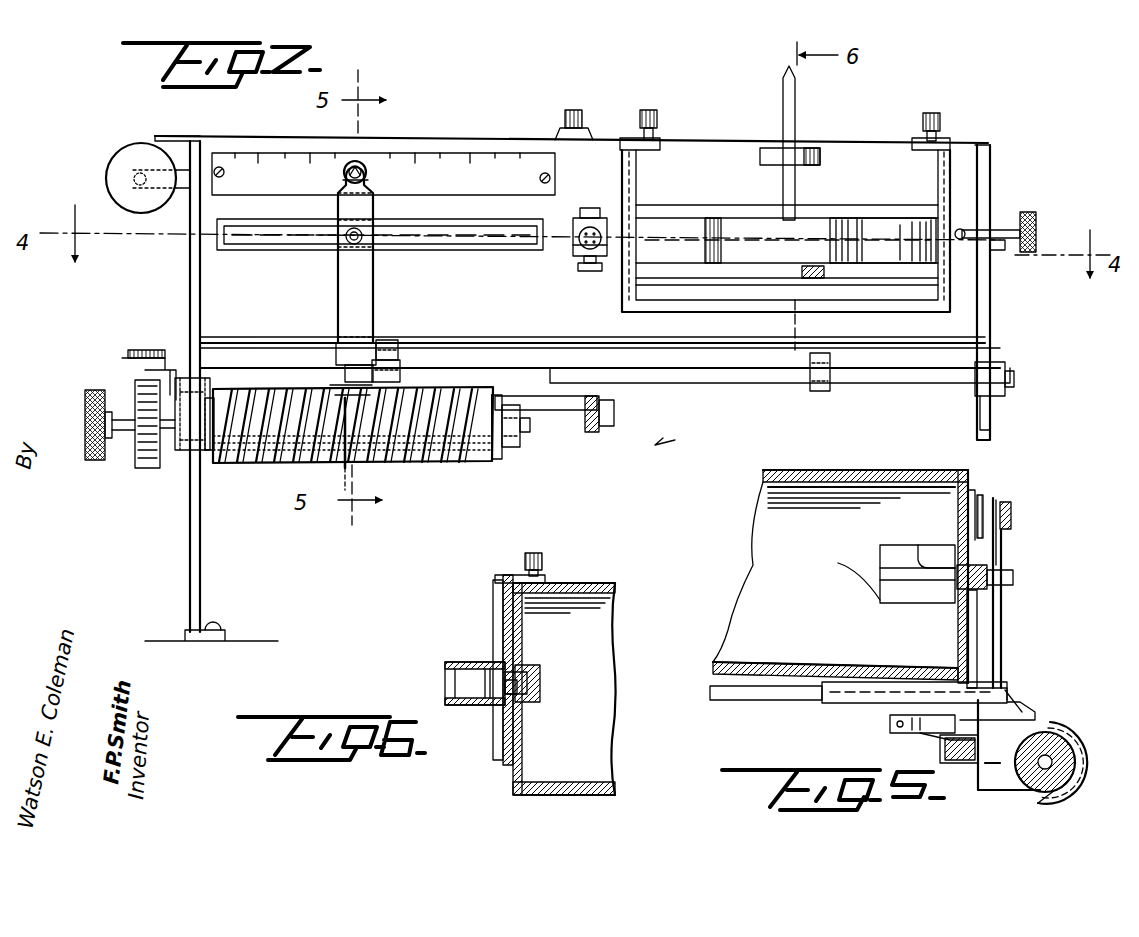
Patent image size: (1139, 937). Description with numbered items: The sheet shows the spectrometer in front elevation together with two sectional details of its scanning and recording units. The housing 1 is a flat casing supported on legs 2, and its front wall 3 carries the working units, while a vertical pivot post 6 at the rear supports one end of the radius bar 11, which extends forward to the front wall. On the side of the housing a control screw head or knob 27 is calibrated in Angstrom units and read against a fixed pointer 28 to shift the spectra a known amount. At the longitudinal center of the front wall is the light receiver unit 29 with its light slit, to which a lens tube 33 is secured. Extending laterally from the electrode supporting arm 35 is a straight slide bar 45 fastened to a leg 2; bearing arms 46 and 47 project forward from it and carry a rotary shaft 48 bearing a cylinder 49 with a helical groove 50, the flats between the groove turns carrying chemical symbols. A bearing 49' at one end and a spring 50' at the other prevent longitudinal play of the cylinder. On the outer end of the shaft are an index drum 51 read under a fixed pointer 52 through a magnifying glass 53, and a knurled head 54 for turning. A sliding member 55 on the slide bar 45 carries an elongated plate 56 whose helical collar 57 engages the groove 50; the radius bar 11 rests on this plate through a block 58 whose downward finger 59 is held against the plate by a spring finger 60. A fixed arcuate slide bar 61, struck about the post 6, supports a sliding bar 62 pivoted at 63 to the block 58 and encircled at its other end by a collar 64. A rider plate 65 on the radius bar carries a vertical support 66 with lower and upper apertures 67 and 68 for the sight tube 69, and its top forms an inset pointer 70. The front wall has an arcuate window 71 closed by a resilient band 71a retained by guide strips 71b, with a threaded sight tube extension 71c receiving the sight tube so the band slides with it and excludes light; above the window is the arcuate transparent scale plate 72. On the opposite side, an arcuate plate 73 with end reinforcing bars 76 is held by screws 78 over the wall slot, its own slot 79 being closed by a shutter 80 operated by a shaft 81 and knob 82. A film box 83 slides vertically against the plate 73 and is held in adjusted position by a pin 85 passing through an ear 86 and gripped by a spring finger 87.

In FIG. 2, the housing 1 is at (979, 142).
In FIG. 6, the housing 1 is at (598, 583).
In FIG. 5, the housing 1 is at (906, 470).
In FIG. 2, the supporting leg 2 is at (188, 562).
In FIG. 2, the front wall 3 is at (600, 150).
In FIG. 2, the pivot post 6 is at (855, 352).
In FIG. 5, the radius bar 11 is at (761, 700).
In FIG. 2, the knob 27 is at (126, 152).
In FIG. 2, the fixed pointer 28 is at (168, 135).
In FIG. 2, the light receiver unit 29 is at (596, 216).
In FIG. 2, the lens tube 33 is at (575, 250).
In FIG. 2, the electrode supporting arm 35 is at (597, 433).
In FIG. 2, the slide bar 45 is at (560, 412).
In FIG. 5, the slide bar 45 is at (942, 748).
In FIG. 2, the bearing arm 46 is at (512, 450).
In FIG. 2, the bearing arm 47 is at (180, 445).
In FIG. 2, the rotary shaft 48 is at (531, 433).
In FIG. 5, the rotary shaft 48 is at (1053, 762).
In FIG. 2, the cylinder 49 is at (474, 456).
In FIG. 5, the cylinder 49 is at (1059, 749).
In FIG. 2, the bearing 49' is at (502, 461).
In FIG. 2, the helical groove 50 is at (353, 447).
In FIG. 5, the helical groove 50 is at (1083, 763).
In FIG. 2, the spring 50' is at (219, 455).
In FIG. 2, the index drum 51 is at (140, 470).
In FIG. 2, the fixed pointer 52 is at (125, 362).
In FIG. 2, the magnifying glass 53 is at (137, 348).
In FIG. 2, the knurled head 54 is at (85, 390).
In FIG. 5, the sliding member 55 is at (967, 765).
In FIG. 5, the elongated plate 56 is at (1010, 715).
In FIG. 2, the helical collar 57 is at (347, 468).
In FIG. 5, the helical collar 57 is at (1068, 797).
In FIG. 2, the block 58 is at (345, 374).
In FIG. 5, the block 58 is at (1018, 695).
In FIG. 5, the finger 59 is at (895, 718).
In FIG. 5, the spring finger 60 is at (895, 738).
In FIG. 2, the fixed arcuate slide bar 61 is at (783, 384).
In FIG. 2, the sliding bar 62 is at (722, 362).
In FIG. 2, the pivot 63 is at (398, 345).
In FIG. 2, the collar 64 is at (820, 392).
In FIG. 2, the rider plate 65 is at (336, 352).
In FIG. 5, the rider plate 65 is at (847, 690).
In FIG. 2, the vertical support 66 is at (368, 303).
In FIG. 5, the vertical support 66 is at (1003, 636).
In FIG. 5, the lower aperture 67 is at (995, 572).
In FIG. 2, the upper aperture 68 is at (344, 170).
In FIG. 5, the upper aperture 68 is at (1006, 506).
In FIG. 5, the sight tube 69 is at (1014, 584).
In FIG. 2, the inset pointer 70 is at (362, 163).
In FIG. 5, the inset pointer 70 is at (981, 500).
In FIG. 2, the arcuate window 71 is at (313, 242).
In FIG. 5, the arcuate window 71 is at (973, 592).
In FIG. 5, the resilient band 71a is at (932, 556).
In FIG. 5, the guide strips 71b is at (880, 550).
In FIG. 5, the sight tube extension 71c is at (958, 590).
In FIG. 2, the arcuate transparent plate 72 is at (447, 152).
In FIG. 5, the arcuate transparent plate 72 is at (975, 508).
In FIG. 2, the arcuate plate 73 is at (845, 160).
In FIG. 6, the arcuate plate 73 is at (505, 622).
In FIG. 2, the reinforcing bar 76 is at (952, 182).
In FIG. 6, the reinforcing bar 76 is at (493, 605).
In FIG. 2, the screw 78 is at (652, 110).
In FIG. 6, the screw 78 is at (543, 560).
In FIG. 6, the plate slot 79 is at (530, 700).
In FIG. 6, the shutter 80 is at (540, 675).
In FIG. 2, the shaft 81 is at (1002, 228).
In FIG. 2, the knob 82 is at (1036, 222).
In FIG. 2, the film box 83 is at (832, 228).
In FIG. 6, the film box 83 is at (445, 668).
In FIG. 2, the pin 85 is at (790, 186).
In FIG. 2, the ear 86 is at (760, 152).
In FIG. 2, the spring finger 87 is at (780, 140).